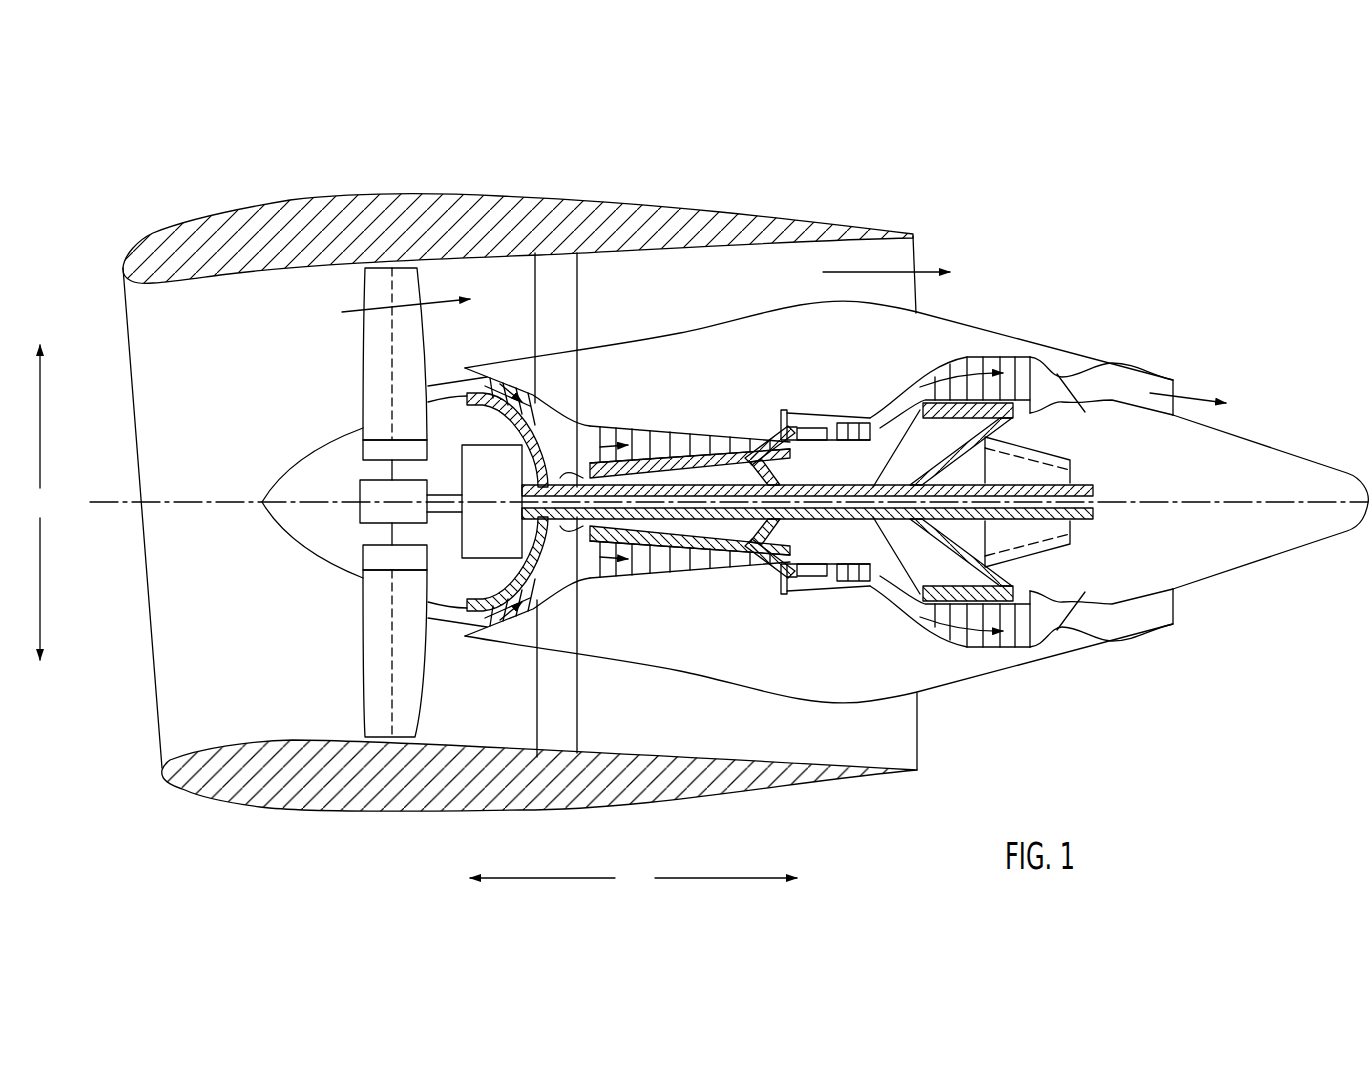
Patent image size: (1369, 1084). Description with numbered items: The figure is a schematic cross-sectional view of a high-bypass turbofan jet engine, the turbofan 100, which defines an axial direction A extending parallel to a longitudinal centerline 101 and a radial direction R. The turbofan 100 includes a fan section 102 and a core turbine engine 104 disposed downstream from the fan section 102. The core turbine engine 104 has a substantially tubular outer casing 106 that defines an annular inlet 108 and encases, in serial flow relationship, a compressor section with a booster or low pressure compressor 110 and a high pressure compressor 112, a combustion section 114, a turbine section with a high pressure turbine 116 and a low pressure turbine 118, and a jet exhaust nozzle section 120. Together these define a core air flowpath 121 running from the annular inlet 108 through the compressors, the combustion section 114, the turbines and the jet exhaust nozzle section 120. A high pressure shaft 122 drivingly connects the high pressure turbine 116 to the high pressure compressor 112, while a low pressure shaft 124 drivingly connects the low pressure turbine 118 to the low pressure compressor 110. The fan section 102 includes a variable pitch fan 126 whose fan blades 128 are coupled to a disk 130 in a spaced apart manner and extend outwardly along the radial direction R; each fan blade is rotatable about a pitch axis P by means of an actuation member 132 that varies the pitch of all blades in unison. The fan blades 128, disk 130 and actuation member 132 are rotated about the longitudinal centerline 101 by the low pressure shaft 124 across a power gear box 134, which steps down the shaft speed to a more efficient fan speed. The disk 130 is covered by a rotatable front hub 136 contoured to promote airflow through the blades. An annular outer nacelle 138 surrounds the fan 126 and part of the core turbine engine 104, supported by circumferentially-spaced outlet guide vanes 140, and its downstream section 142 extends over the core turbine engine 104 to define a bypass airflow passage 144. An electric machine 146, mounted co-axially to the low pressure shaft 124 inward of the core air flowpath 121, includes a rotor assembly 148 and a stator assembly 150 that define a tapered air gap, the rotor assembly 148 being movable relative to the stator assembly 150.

The turbofan 100 is at (1078, 205).
The longitudinal centerline 101 is at (1140, 500).
The fan section 102 is at (503, 498).
The core turbine engine 104 is at (898, 444).
The outer casing 106 is at (758, 690).
The annular inlet 108 is at (465, 637).
The low pressure compressor 110 is at (512, 641).
The high pressure compressor 112 is at (610, 567).
The combustion section 114 is at (803, 572).
The high pressure turbine 116 is at (873, 585).
The low pressure turbine 118 is at (1010, 655).
The jet exhaust nozzle section 120 is at (1075, 622).
The core air flowpath 121 is at (560, 585).
The high pressure shaft 122 is at (807, 417).
The low pressure shaft 124 is at (1085, 488).
The variable pitch fan 126 is at (323, 563).
The fan blades 128 is at (360, 672).
The disk 130 is at (376, 452).
The actuation member 132 is at (360, 487).
The power gear box 134 is at (518, 462).
The front hub 136 is at (273, 523).
The outer nacelle 138 is at (410, 813).
The outlet guide vanes 140 is at (577, 288).
The downstream section 142 is at (833, 226).
The bypass airflow passage 144 is at (748, 285).
The electric machine 146 is at (1073, 432).
The rotor assembly 148 is at (1078, 520).
The stator assembly 150 is at (1060, 548).
The pitch axis P is at (390, 290).
The radial direction R is at (40, 502).
The axial direction A is at (633, 879).